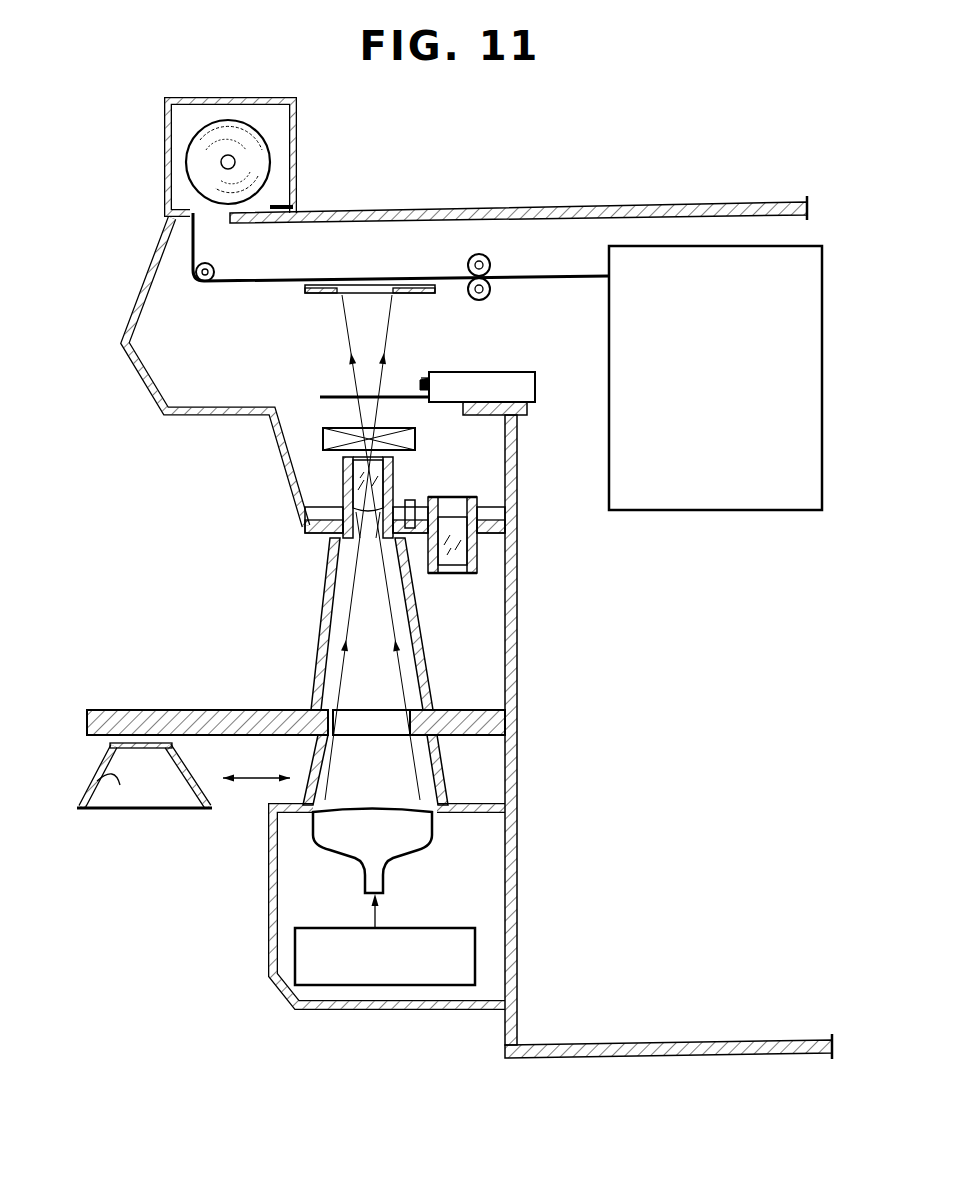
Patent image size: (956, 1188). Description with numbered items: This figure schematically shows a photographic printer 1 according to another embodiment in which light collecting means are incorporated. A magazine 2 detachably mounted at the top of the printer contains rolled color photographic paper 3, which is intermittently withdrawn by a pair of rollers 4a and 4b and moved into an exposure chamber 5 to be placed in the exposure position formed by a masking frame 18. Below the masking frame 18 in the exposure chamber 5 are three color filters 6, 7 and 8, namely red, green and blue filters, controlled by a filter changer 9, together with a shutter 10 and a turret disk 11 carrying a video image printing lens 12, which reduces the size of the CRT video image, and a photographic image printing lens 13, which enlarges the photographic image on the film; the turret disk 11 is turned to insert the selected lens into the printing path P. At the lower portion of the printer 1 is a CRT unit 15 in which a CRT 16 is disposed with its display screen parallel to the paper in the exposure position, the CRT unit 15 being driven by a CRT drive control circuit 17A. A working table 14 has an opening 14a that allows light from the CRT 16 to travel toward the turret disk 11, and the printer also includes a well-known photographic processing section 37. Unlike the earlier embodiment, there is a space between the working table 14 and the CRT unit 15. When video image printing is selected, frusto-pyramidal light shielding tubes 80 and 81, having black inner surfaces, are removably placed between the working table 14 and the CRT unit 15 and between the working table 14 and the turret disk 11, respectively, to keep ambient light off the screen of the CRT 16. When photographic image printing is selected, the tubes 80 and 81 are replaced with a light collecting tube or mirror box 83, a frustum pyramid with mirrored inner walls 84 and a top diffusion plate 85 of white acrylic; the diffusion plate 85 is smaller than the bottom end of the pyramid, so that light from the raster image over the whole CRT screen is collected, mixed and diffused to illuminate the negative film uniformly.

The photographic printer 1 is at (549, 204).
The magazine 2 is at (164, 150).
The color photographic paper 3 is at (296, 278).
The roller 4a is at (215, 266).
The roller 4b is at (492, 262).
The exposure chamber 5 is at (145, 300).
The red filter 6 is at (327, 395).
The green filter 7 is at (420, 388).
The blue filter 8 is at (424, 378).
The filter changer 9 is at (516, 372).
The shutter 10 is at (416, 440).
The turret disk 11 is at (328, 537).
The video image printing lens 12 is at (371, 540).
The photographic image printing lens 13 is at (455, 575).
The working table 14 is at (168, 709).
The opening 14a is at (333, 712).
The CRT unit 15 is at (267, 880).
The CRT 16 is at (340, 857).
The CRT drive control circuit 17A is at (445, 927).
The masking frame 18 is at (310, 295).
The photographic processing section 37 is at (725, 512).
The light shielding tube 80 is at (442, 760).
The light shielding tube 81 is at (428, 673).
The mirror box 83 is at (148, 814).
The mirrored inner walls 84 is at (97, 781).
The diffusion plate 85 is at (157, 748).
The printing path P is at (328, 600).